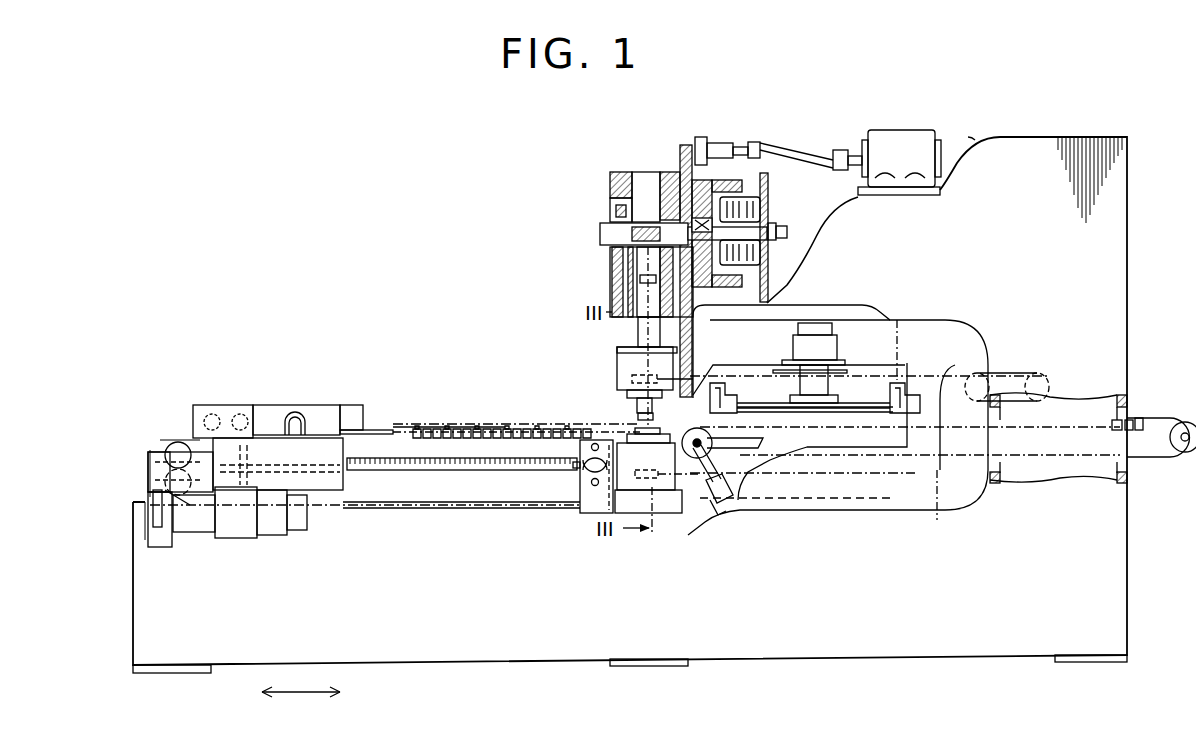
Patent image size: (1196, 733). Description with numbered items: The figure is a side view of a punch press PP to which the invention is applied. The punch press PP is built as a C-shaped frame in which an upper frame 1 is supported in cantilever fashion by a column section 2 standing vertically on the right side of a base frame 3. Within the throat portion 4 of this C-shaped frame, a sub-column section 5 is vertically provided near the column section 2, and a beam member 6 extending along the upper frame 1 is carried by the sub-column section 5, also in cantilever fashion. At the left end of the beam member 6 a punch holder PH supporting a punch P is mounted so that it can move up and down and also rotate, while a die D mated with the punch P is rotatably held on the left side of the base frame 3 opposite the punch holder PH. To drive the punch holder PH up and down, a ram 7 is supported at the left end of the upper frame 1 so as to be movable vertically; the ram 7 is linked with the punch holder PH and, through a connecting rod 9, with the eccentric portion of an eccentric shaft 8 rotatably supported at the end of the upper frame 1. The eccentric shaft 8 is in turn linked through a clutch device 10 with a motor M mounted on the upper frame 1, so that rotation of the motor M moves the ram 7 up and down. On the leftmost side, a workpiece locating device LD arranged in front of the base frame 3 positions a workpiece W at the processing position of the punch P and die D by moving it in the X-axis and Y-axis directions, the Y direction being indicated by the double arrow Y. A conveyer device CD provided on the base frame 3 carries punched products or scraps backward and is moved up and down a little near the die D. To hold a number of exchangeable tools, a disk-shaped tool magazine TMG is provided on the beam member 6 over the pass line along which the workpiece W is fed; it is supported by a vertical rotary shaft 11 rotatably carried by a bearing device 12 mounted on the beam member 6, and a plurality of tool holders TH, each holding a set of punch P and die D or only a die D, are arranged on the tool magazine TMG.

The upper frame 1 is at (969, 142).
The column section 2 is at (1127, 404).
The base frame 3 is at (774, 648).
The throat portion 4 is at (857, 312).
The sub-column section 5 is at (942, 455).
The beam member 6 is at (778, 327).
The ram 7 is at (612, 295).
The eccentric shaft 8 is at (610, 232).
The connecting rod 9 is at (612, 268).
The clutch device 10 is at (767, 257).
The rotary shaft 11 is at (769, 339).
The bearing device 12 is at (812, 335).
The punch press PP is at (1052, 128).
The motor M is at (912, 168).
The punch holder PH is at (608, 357).
The punch P is at (643, 420).
The die D is at (627, 432).
The tool magazine TMG is at (857, 346).
The tool holders TH is at (890, 398).
The conveyer device CD is at (1031, 458).
The workpiece W is at (473, 425).
The workpiece locating device LD is at (336, 394).
The Y-axis direction Y is at (310, 693).